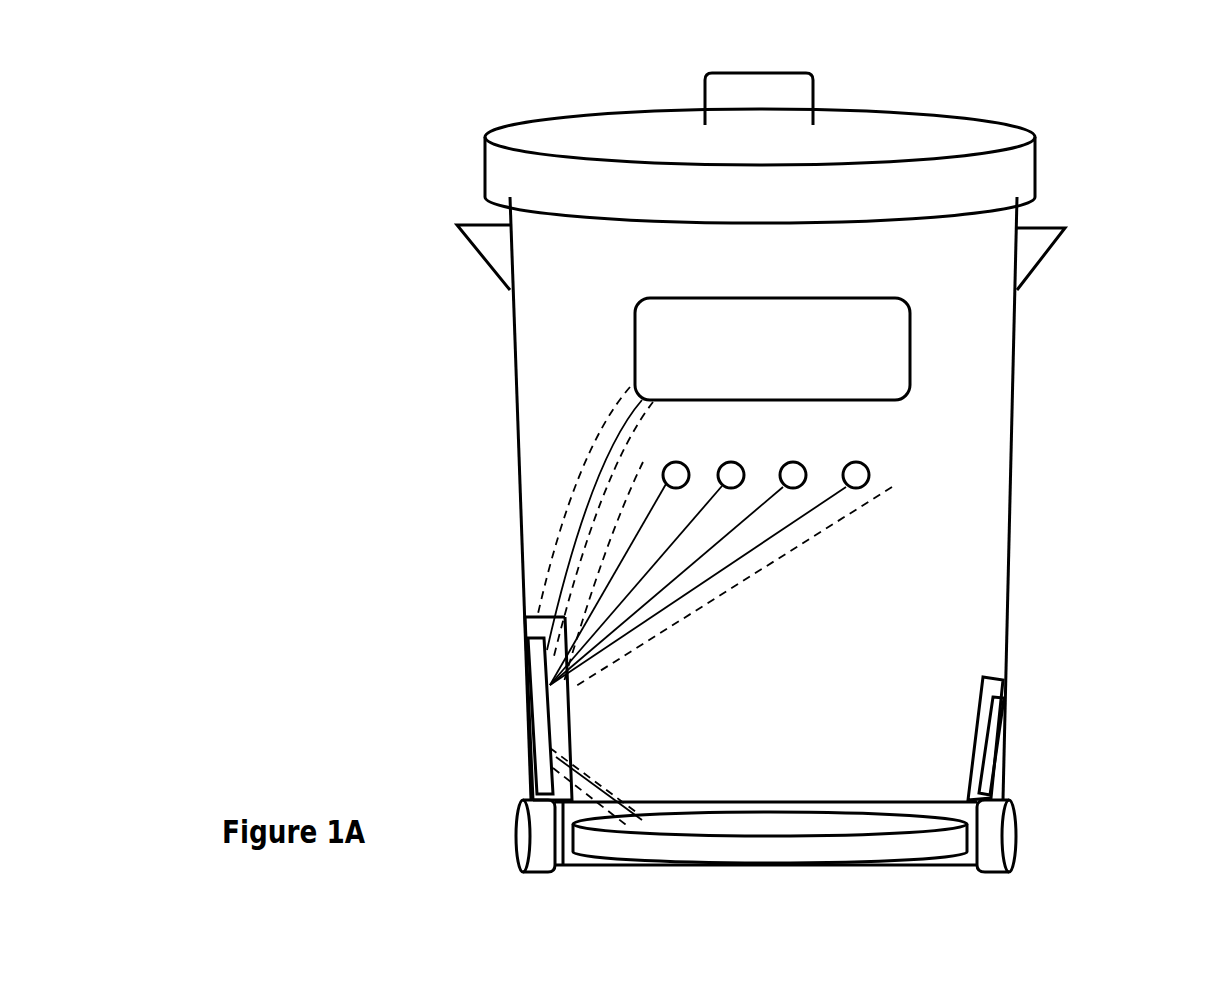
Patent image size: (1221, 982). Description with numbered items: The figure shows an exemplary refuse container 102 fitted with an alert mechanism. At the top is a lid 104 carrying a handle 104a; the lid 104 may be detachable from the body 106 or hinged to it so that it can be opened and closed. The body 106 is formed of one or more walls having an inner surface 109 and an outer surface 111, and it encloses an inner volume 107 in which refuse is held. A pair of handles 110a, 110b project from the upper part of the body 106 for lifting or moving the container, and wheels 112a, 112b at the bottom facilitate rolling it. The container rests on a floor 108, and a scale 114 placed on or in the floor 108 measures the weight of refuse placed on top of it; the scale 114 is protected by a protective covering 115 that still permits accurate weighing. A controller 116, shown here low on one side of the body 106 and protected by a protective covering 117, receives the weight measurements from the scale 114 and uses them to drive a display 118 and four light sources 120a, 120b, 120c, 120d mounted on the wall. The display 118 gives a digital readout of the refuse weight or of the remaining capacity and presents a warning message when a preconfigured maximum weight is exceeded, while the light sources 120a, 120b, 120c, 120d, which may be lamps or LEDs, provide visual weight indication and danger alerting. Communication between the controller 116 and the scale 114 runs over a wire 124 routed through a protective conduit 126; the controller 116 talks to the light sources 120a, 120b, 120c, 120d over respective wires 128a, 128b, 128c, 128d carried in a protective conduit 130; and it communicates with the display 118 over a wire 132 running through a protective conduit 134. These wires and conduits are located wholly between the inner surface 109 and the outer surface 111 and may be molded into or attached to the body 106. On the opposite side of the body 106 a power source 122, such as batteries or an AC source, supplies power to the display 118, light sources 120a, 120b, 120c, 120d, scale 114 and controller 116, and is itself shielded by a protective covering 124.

The refuse container 102 is at (1093, 98).
The lid 104 is at (932, 122).
The handle 104a is at (798, 72).
The body 106 is at (1020, 400).
The inner volume 107 is at (932, 655).
The floor 108 is at (832, 868).
The inner surface 109 is at (513, 337).
The handle 110a is at (1060, 226).
The handle 110b is at (460, 225).
The outer surface 111 is at (507, 335).
The wheel 112a is at (517, 808).
The wheel 112b is at (1015, 802).
The scale 114 is at (880, 822).
The protective covering 115 is at (808, 800).
The controller 116 is at (525, 714).
The protective covering 117 is at (578, 742).
The display 118 is at (838, 298).
The light source 120a is at (684, 463).
The light source 120b is at (740, 463).
The light source 120c is at (802, 463).
The light source 120d is at (865, 463).
The power source 122 is at (1005, 735).
The wire 124 is at (578, 788).
The protective conduit 126 is at (617, 790).
The wire 128a is at (605, 600).
The wire 128b is at (655, 563).
The wire 128c is at (730, 540).
The wire 128d is at (793, 525).
The protective conduit 130 is at (880, 500).
The wire 132 is at (565, 525).
The protective conduit 134 is at (583, 438).